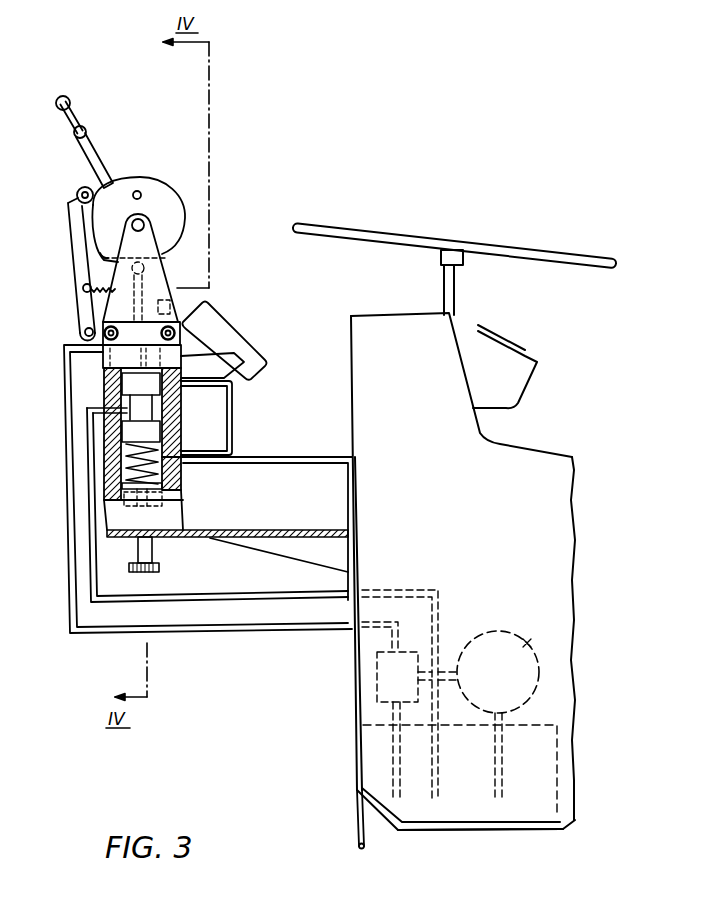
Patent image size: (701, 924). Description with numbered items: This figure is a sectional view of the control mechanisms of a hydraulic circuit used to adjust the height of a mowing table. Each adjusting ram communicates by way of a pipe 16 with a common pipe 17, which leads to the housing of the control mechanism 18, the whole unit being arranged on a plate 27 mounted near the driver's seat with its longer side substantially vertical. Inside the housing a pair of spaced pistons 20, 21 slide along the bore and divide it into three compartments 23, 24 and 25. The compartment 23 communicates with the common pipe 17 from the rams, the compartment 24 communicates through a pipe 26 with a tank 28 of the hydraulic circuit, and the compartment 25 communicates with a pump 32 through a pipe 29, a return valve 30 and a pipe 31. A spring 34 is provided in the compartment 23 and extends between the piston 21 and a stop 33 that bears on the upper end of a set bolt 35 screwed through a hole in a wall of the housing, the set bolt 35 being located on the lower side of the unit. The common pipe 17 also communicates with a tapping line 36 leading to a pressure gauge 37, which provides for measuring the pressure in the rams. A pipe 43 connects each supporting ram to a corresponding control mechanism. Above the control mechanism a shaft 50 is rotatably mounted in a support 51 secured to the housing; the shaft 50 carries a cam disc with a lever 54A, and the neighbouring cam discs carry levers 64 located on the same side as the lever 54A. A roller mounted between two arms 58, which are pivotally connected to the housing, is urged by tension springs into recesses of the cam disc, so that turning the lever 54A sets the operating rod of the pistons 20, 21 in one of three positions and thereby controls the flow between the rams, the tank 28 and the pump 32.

The lever 54A is at (71, 104).
The lever 64 is at (93, 143).
The shaft 50 is at (144, 220).
The support 51 is at (164, 272).
The arms 58 is at (75, 247).
The compartment 25 is at (183, 373).
The pressure gauge 37 is at (260, 375).
The tapping line 36 is at (233, 430).
The common pipe 17 is at (312, 457).
The piston 20 is at (147, 394).
The piston 21 is at (153, 430).
The spring 34 is at (150, 452).
The stop 33 is at (160, 483).
The control mechanism 18 is at (183, 497).
The pipe 29 is at (64, 384).
The compartment 24 is at (122, 418).
The pipe 26 is at (91, 437).
The compartment 23 is at (125, 473).
The plate 27 is at (266, 529).
The set bolt 35 is at (153, 553).
The return valve 30 is at (374, 666).
The pipe 31 is at (450, 656).
The pump 32 is at (528, 641).
The tank 28 is at (549, 770).
The pipe 43 is at (356, 826).
The pipe 16 is at (471, 830).